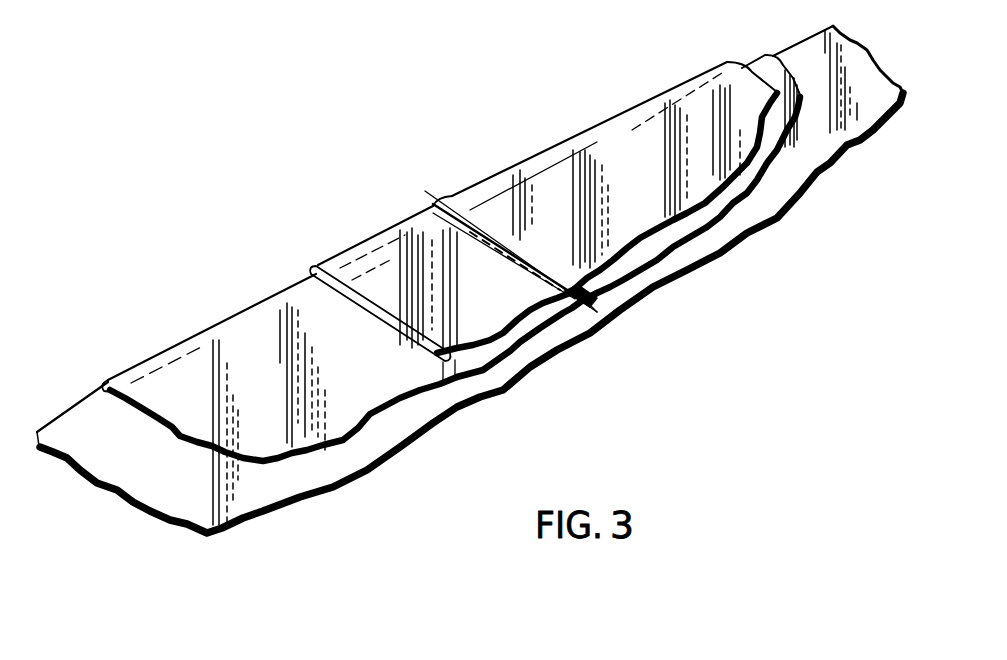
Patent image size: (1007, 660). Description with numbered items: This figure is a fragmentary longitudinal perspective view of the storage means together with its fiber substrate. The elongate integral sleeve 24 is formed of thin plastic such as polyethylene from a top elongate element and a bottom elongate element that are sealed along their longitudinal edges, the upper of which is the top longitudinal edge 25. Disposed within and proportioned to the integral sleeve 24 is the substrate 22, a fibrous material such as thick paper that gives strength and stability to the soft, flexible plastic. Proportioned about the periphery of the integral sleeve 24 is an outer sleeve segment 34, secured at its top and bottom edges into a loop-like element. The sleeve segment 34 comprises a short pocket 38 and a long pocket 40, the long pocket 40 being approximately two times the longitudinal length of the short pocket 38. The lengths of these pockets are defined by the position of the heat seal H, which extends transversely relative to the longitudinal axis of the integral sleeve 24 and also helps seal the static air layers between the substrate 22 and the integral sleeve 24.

The substrate 22 is at (145, 480).
The integral sleeve 24 is at (177, 373).
The top longitudinal edge 25 is at (393, 243).
The outer sleeve segment 34 is at (620, 138).
The short pocket 38 is at (338, 288).
The long pocket 40 is at (768, 82).
The heat seal H is at (418, 187).